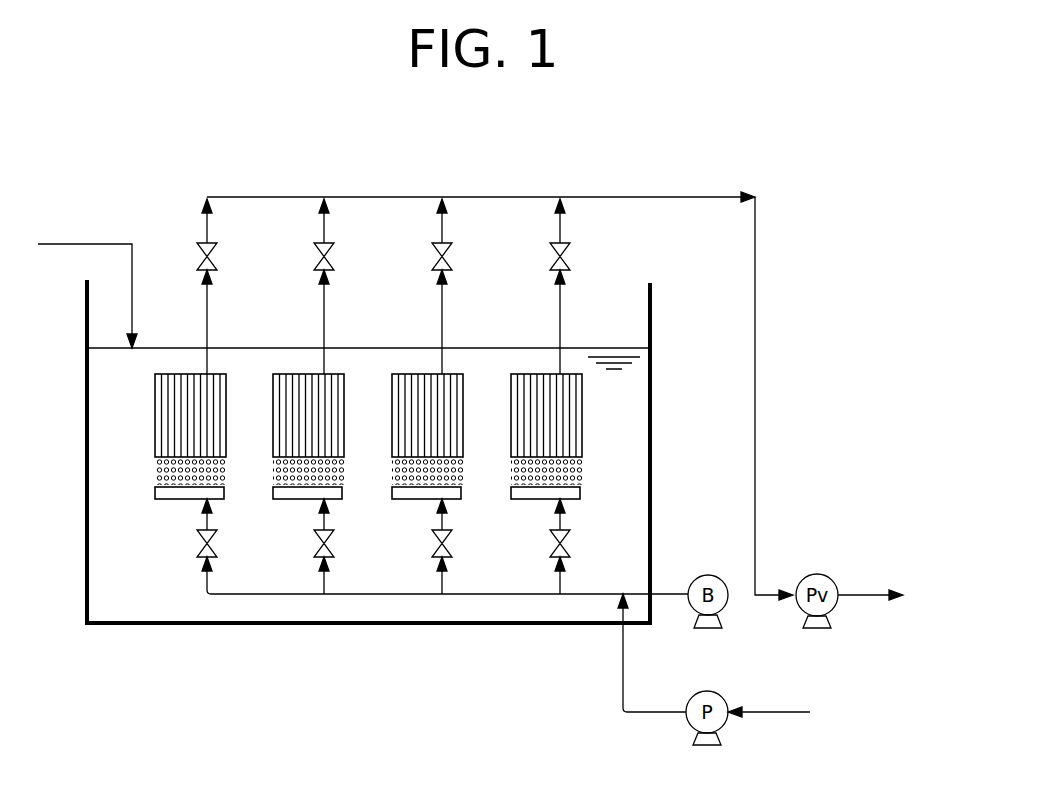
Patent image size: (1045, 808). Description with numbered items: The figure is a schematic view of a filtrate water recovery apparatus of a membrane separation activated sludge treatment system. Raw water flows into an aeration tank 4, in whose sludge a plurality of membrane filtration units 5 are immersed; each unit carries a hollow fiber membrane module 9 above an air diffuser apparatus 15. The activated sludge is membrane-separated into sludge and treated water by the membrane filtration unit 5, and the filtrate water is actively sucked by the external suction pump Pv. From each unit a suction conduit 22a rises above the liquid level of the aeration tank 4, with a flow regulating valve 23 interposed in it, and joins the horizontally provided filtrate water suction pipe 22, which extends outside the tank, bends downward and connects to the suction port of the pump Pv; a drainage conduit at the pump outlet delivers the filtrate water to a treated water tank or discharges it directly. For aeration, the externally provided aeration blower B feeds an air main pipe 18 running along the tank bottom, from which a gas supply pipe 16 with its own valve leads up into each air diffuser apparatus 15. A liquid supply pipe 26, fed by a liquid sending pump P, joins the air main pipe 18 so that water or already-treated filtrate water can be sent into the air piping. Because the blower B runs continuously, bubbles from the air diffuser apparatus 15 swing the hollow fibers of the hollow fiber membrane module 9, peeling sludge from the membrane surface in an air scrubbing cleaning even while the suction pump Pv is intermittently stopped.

The aeration tank 4 is at (352, 624).
The membrane filtration unit 5 is at (176, 513).
The hollow fiber membrane module 9 is at (230, 433).
The air diffuser apparatus 15 is at (224, 492).
The gas supply pipe 16 is at (208, 516).
The air main pipe 18 is at (580, 596).
The filtrate water suction pipe 22 is at (610, 197).
The suction conduit 22a is at (205, 242).
The flow regulating valve 23 is at (201, 269).
The liquid supply pipe 26 is at (653, 714).